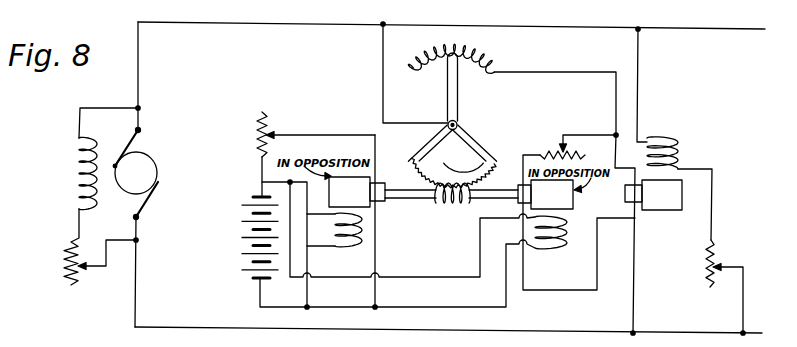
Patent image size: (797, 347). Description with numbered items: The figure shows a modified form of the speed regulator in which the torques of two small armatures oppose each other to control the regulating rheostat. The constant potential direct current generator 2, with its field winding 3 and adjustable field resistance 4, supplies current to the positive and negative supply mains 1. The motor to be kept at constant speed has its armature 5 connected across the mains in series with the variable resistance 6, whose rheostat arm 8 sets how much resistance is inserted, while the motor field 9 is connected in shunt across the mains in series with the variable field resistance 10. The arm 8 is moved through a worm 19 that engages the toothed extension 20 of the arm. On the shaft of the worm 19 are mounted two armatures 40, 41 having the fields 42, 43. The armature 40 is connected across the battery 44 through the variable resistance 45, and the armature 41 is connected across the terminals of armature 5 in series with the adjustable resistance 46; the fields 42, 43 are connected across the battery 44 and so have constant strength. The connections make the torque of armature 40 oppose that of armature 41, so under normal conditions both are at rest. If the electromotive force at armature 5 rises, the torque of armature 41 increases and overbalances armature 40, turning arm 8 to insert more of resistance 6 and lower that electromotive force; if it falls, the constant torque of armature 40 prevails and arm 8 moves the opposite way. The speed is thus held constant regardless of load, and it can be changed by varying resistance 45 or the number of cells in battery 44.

The supply mains 1 is at (295, 28).
The direct current generator 2 is at (135, 174).
The field winding 3 is at (103, 158).
The adjustable field resistance 4 is at (91, 247).
The armature 5 is at (653, 195).
The variable resistance 6 is at (459, 58).
The arm 8 is at (455, 98).
The field 9 is at (663, 142).
The variable field resistance 10 is at (702, 266).
The worm 19 is at (451, 207).
The toothed extension 20 is at (444, 177).
The armature 40 is at (357, 192).
The armature 41 is at (545, 194).
The field 42 is at (348, 242).
The field 43 is at (551, 244).
The battery 44 is at (247, 243).
The variable resistance 45 is at (298, 134).
The adjustable resistance 46 is at (573, 146).